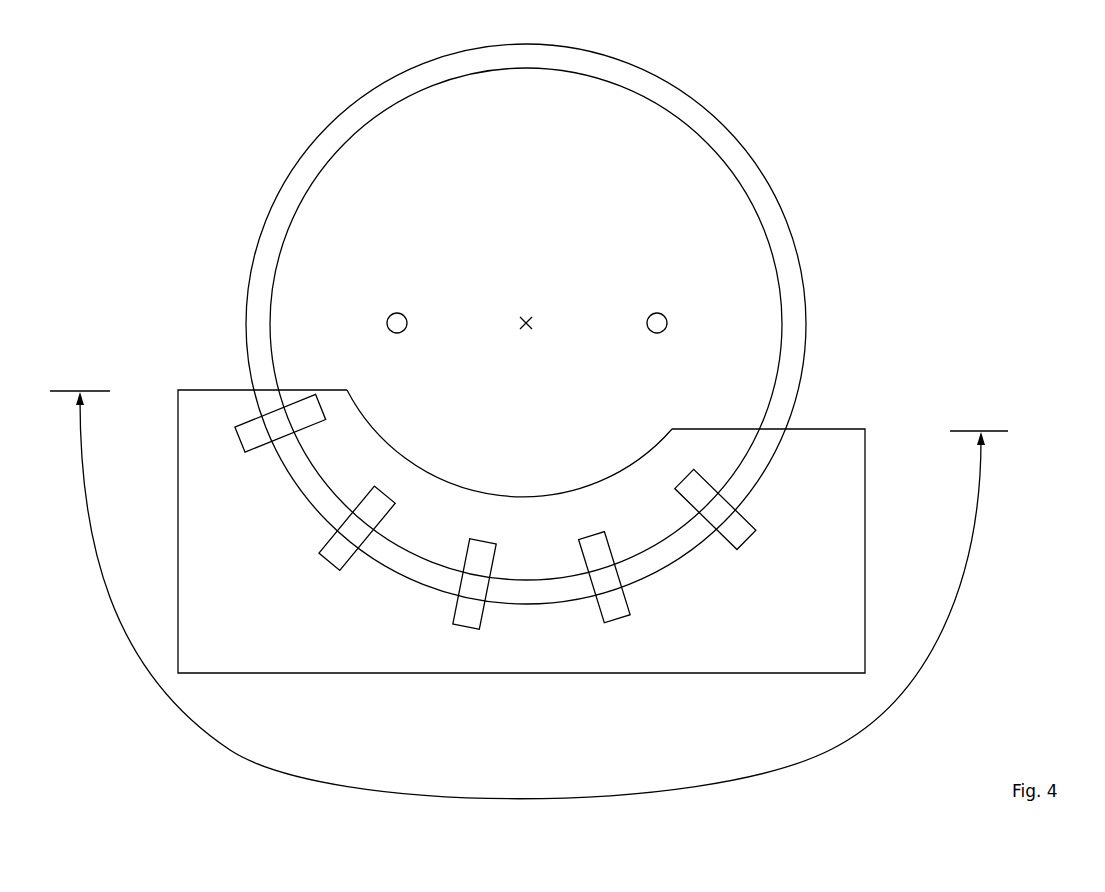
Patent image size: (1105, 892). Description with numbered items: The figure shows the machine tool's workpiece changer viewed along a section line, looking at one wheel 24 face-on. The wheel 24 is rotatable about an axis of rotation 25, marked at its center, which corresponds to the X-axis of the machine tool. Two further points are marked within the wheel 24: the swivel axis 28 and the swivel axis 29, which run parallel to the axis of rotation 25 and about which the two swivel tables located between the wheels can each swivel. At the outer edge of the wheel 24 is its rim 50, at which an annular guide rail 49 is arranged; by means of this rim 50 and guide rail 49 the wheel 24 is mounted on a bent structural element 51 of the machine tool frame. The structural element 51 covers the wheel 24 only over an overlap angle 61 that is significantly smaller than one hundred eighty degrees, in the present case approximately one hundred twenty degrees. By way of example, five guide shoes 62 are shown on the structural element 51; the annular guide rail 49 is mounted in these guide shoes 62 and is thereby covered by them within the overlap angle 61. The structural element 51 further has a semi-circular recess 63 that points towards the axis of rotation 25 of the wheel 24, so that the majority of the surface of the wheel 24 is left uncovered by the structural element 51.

The wheel 24 is at (568, 322).
The axis of rotation 25 is at (527, 318).
The swivel axis 28 is at (660, 321).
The swivel axis 29 is at (393, 321).
The annular guide rail 49 is at (800, 158).
The rim 50 is at (665, 78).
The structural element 51 is at (543, 508).
The overlap angle 61 is at (951, 602).
The guide shoes 62 is at (333, 552).
The semi-circular recess 63 is at (516, 497).